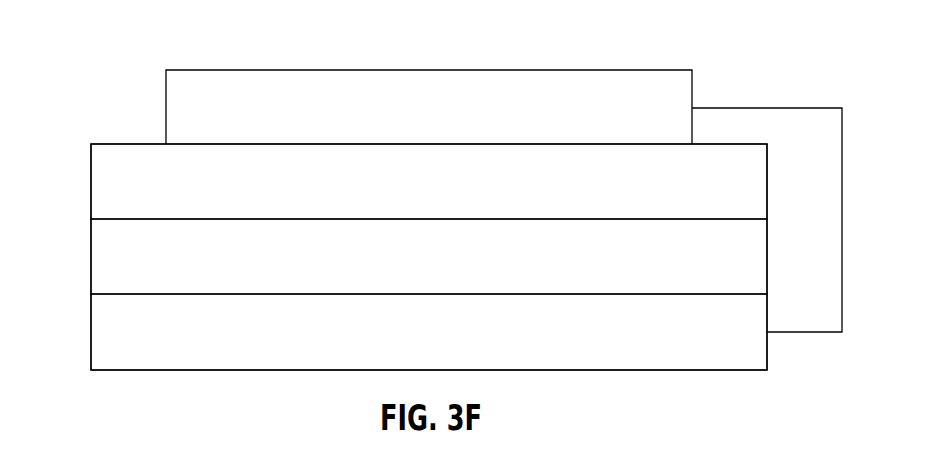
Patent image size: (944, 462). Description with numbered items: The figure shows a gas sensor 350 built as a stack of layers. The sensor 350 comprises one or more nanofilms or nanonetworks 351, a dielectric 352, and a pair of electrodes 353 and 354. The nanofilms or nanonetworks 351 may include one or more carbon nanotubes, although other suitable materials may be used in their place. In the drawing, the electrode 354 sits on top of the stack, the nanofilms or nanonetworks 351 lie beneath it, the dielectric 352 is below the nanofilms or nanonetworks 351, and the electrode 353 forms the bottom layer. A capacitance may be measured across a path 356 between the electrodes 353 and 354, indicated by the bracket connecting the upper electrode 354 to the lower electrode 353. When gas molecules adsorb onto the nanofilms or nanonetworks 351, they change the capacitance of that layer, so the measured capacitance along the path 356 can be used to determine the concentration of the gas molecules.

The sensor 350 is at (92, 59).
The nanofilms or nanonetworks 351 is at (450, 194).
The dielectric 352 is at (450, 268).
The electrode 353 is at (450, 345).
The electrode 354 is at (449, 110).
The path 356 is at (900, 241).